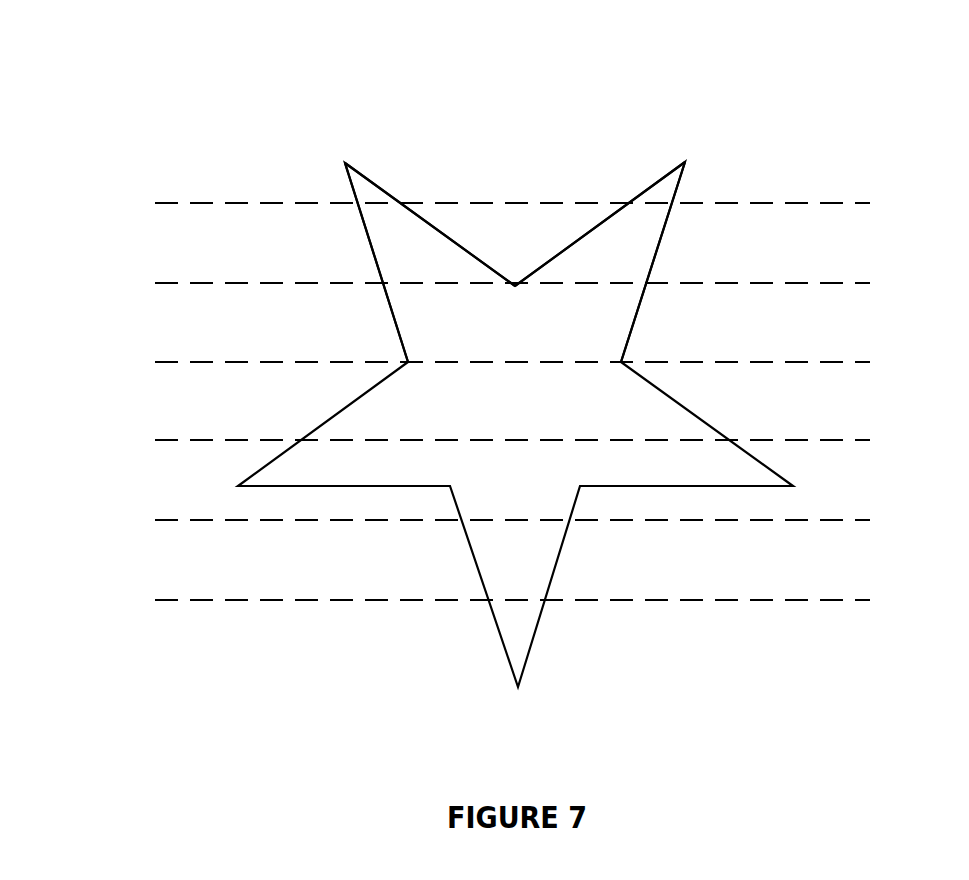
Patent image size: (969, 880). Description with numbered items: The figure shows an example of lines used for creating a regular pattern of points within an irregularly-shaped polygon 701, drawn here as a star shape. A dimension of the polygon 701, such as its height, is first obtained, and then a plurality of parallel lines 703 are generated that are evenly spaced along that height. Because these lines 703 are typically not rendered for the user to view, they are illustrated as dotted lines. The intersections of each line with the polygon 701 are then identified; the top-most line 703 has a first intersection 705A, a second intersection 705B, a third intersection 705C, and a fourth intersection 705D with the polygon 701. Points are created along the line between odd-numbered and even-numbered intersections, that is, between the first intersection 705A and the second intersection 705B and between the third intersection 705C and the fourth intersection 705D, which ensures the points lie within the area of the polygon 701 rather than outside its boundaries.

The polygon 701 is at (376, 182).
The parallel lines 703 is at (162, 362).
The first intersection 705A is at (343, 195).
The second intersection 705B is at (405, 192).
The third intersection 705C is at (622, 193).
The fourth intersection 705D is at (687, 190).